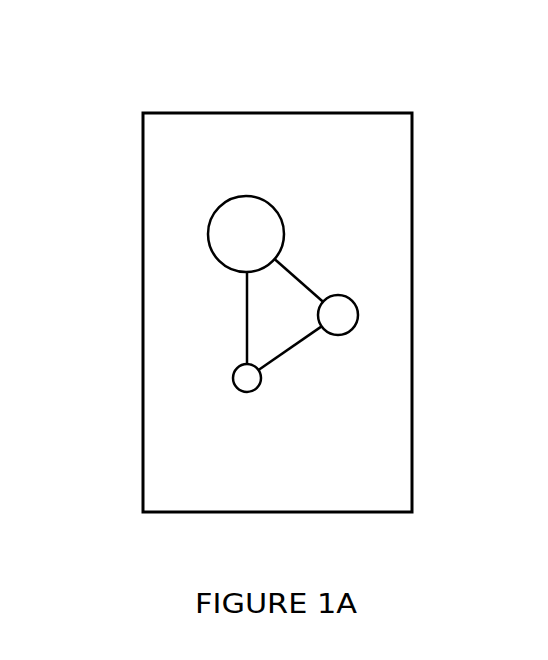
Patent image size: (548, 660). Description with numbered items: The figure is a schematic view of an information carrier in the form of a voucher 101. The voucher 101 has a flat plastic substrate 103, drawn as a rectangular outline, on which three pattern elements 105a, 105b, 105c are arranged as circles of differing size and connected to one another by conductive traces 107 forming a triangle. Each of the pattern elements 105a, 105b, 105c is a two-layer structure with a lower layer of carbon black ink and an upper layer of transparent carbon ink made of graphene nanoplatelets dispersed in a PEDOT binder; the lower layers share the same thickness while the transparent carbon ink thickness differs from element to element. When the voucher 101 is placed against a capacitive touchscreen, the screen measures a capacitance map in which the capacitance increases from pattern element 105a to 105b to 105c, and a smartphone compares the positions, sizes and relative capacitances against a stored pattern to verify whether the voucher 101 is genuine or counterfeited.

The voucher 101 is at (197, 110).
The flat plastic substrate 103 is at (200, 473).
The pattern element 105a is at (243, 235).
The pattern element 105b is at (342, 322).
The pattern element 105c is at (243, 380).
The conductive traces 107 is at (303, 280).